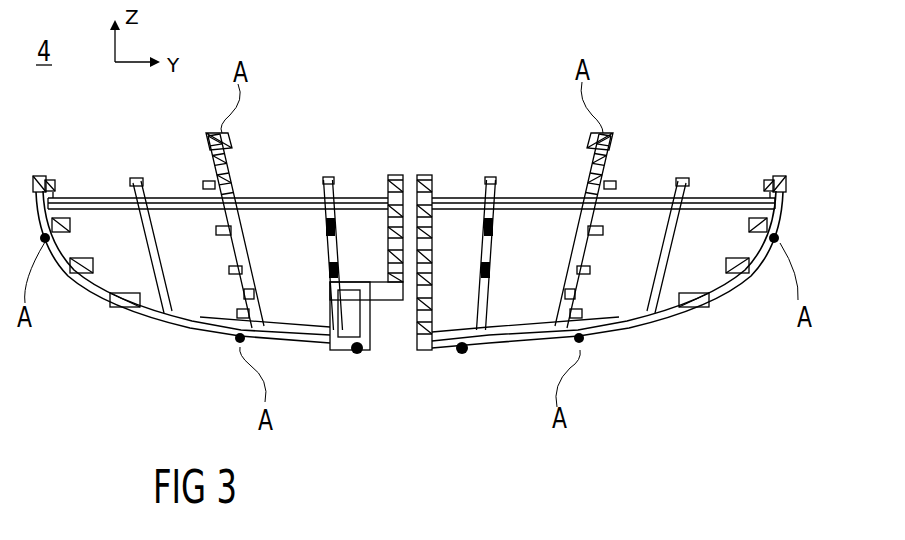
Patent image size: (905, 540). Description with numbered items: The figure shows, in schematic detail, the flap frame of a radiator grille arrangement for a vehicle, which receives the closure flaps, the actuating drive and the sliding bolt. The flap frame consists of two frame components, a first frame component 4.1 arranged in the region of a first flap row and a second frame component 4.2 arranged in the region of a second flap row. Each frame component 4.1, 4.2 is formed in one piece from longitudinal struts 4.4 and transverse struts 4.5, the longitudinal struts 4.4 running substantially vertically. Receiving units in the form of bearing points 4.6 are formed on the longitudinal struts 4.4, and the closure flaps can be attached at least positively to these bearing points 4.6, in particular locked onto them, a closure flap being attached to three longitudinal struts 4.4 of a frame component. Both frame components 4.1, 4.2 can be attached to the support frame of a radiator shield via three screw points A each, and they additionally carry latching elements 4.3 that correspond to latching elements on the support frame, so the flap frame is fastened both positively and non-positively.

The first frame component 4.1 is at (209, 342).
The second frame component 4.2 is at (613, 342).
The latching elements 4.3 is at (387, 177).
The longitudinal struts 4.4 is at (163, 182).
The transverse struts 4.5 is at (110, 197).
The bearing points 4.6 is at (42, 176).